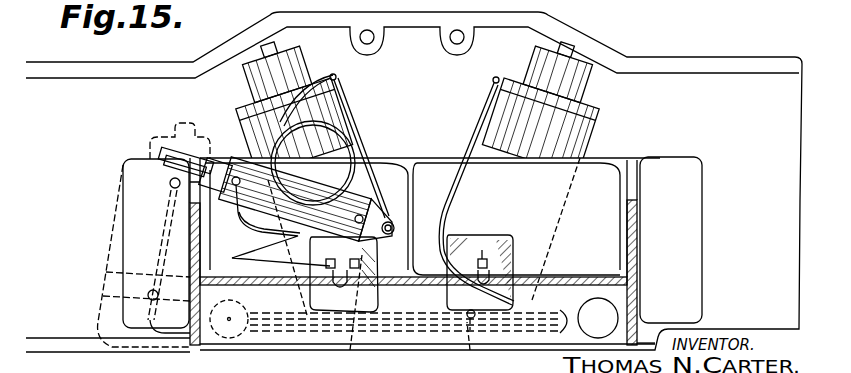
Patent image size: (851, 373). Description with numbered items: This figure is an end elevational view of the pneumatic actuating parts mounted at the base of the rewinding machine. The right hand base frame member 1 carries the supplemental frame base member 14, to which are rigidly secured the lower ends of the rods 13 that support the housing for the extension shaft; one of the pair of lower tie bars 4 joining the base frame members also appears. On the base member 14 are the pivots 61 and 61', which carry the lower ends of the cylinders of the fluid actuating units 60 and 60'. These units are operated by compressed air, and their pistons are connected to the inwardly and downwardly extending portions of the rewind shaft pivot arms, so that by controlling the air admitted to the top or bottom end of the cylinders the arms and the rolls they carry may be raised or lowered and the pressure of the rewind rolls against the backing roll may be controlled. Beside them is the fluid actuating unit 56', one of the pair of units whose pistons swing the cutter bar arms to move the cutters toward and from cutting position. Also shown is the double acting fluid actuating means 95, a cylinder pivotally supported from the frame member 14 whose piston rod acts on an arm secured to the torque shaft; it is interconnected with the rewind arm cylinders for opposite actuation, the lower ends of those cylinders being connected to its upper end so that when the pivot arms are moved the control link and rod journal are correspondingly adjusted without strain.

The base frame member 1 is at (700, 65).
The lower tie bar 4 is at (598, 297).
The rod 13 is at (209, 346).
The supplemental frame base member 14 is at (255, 344).
The fluid actuating unit 56' is at (143, 235).
The fluid actuating unit 60 is at (293, 178).
The fluid actuating unit 60' is at (542, 173).
The pivot 61 is at (344, 305).
The pivot 61' is at (480, 304).
The fluid actuating means 95 is at (310, 180).